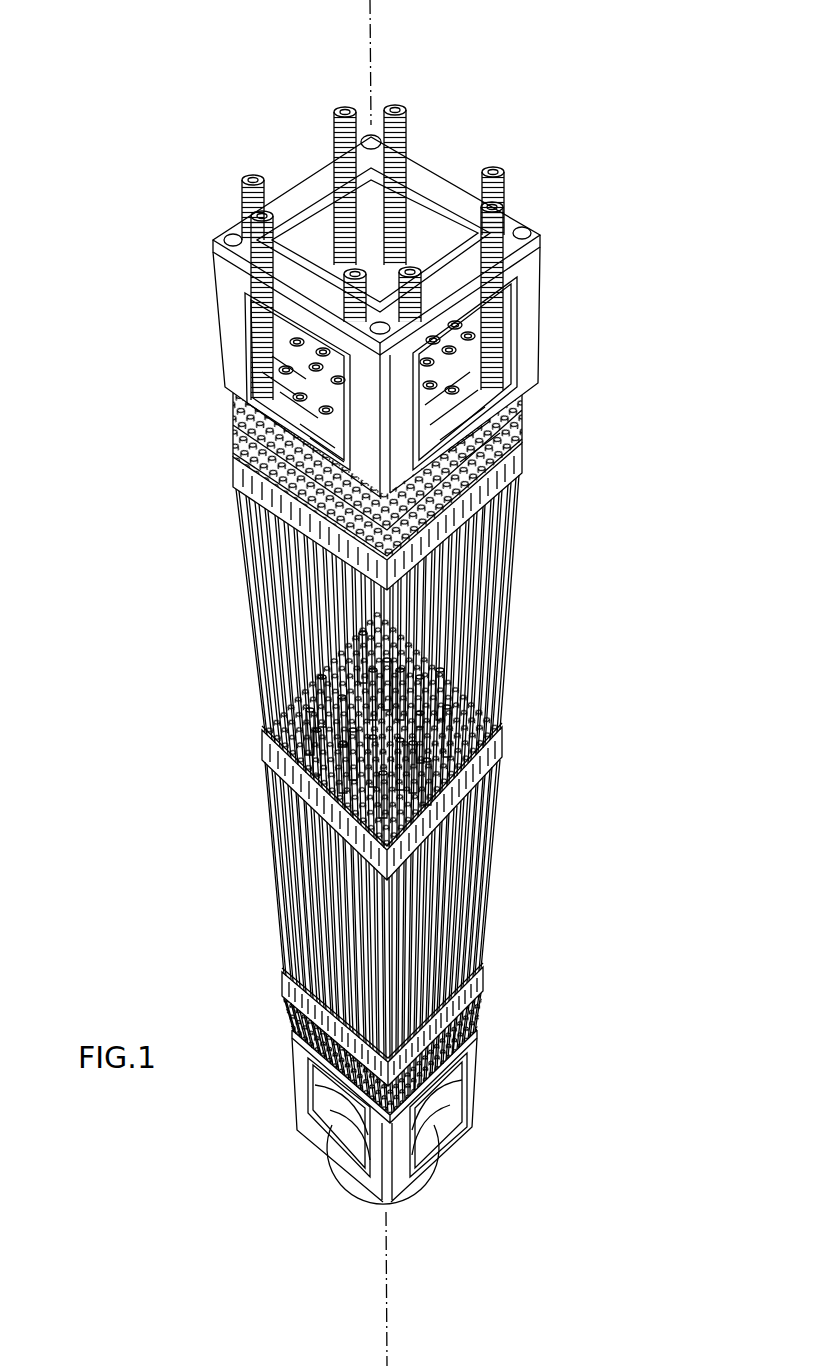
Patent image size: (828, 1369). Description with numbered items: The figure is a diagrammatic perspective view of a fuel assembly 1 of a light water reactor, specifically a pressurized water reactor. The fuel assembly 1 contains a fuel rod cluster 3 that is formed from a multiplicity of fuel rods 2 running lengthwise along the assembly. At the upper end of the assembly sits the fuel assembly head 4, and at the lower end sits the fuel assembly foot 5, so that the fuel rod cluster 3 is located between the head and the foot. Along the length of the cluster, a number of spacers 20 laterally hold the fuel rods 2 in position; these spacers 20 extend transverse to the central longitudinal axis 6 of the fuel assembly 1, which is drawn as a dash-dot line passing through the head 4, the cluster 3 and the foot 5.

The fuel assembly 1 is at (578, 180).
The fuel rods 2 is at (490, 662).
The fuel rod cluster 3 is at (520, 505).
The fuel assembly head 4 is at (534, 330).
The fuel assembly foot 5 is at (478, 1052).
The central longitudinal axis 6 is at (371, 58).
The spacers 20 is at (520, 452).